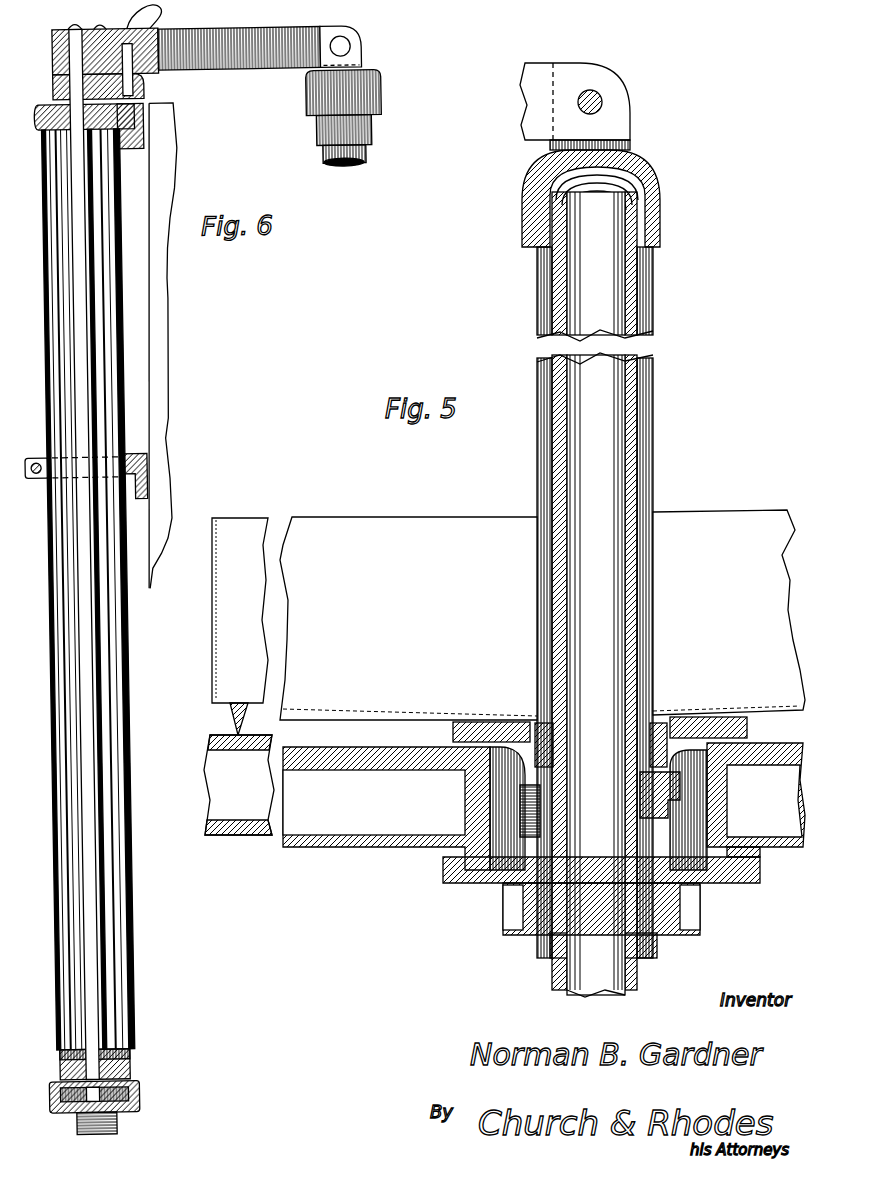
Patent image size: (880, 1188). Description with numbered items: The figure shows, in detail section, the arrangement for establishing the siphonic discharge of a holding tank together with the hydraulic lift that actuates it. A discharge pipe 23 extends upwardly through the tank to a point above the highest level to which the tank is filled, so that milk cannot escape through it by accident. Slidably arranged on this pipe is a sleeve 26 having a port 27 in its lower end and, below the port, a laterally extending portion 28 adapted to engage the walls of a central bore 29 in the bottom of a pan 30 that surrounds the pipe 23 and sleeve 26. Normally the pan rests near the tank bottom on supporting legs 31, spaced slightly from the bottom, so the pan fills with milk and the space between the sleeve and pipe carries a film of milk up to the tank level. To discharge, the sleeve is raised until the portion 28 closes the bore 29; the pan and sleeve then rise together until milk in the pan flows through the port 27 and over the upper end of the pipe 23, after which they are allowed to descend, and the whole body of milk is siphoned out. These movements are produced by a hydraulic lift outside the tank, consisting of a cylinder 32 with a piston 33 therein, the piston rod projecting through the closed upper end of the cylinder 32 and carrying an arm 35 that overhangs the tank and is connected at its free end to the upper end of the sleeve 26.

In FIG. 6, the discharge pipe 23 is at (368, 163).
In FIG. 5, the discharge pipe 23 is at (640, 345).
In FIG. 6, the sleeve 26 is at (380, 140).
In FIG. 5, the sleeve 26 is at (655, 592).
In FIG. 5, the port 27 is at (700, 826).
In FIG. 5, the laterally extending portion 28 is at (521, 841).
In FIG. 5, the central bore 29 is at (680, 713).
In FIG. 5, the pan 30 is at (383, 522).
In FIG. 6, the supporting legs 31 is at (100, 662).
In FIG. 5, the supporting legs 31 is at (230, 722).
In FIG. 6, the cylinder 32 is at (125, 927).
In FIG. 6, the piston 33 is at (125, 1077).
In FIG. 6, the arm 35 is at (250, 72).
In FIG. 5, the arm 35 is at (522, 112).